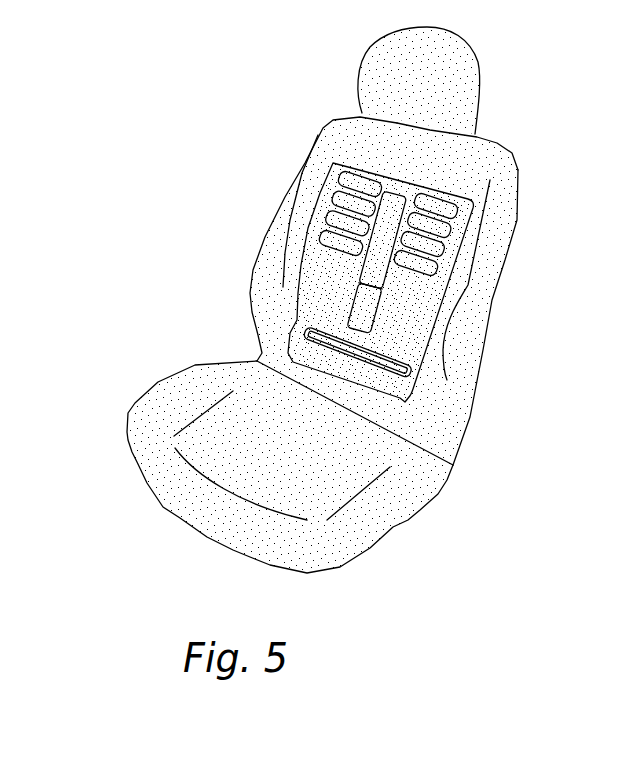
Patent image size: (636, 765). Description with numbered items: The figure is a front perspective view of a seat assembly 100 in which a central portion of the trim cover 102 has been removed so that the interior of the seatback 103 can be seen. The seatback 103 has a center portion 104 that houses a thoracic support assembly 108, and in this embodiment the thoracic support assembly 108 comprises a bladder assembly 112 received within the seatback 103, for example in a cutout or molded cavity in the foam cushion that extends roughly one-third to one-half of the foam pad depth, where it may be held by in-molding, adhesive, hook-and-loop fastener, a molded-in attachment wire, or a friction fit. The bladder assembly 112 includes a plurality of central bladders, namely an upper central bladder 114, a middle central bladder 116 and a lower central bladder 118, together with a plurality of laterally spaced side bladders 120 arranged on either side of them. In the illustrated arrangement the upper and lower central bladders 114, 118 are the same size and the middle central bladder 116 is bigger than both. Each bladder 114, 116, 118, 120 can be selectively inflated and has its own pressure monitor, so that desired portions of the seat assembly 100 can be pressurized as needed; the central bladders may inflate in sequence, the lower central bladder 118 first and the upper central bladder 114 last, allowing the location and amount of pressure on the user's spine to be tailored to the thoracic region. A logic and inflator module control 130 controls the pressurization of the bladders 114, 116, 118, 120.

The seat assembly 100 is at (224, 219).
The trim cover 102 is at (320, 130).
The seatback 103 is at (514, 135).
The center portion 104 is at (325, 171).
The thoracic support assembly 108 is at (446, 178).
The bladder assembly 112 is at (280, 297).
The upper central bladder 114 is at (385, 217).
The middle central bladder 116 is at (370, 265).
The lower central bladder 118 is at (370, 305).
The side bladders 120 is at (318, 228).
The logic and inflator module control 130 is at (414, 377).